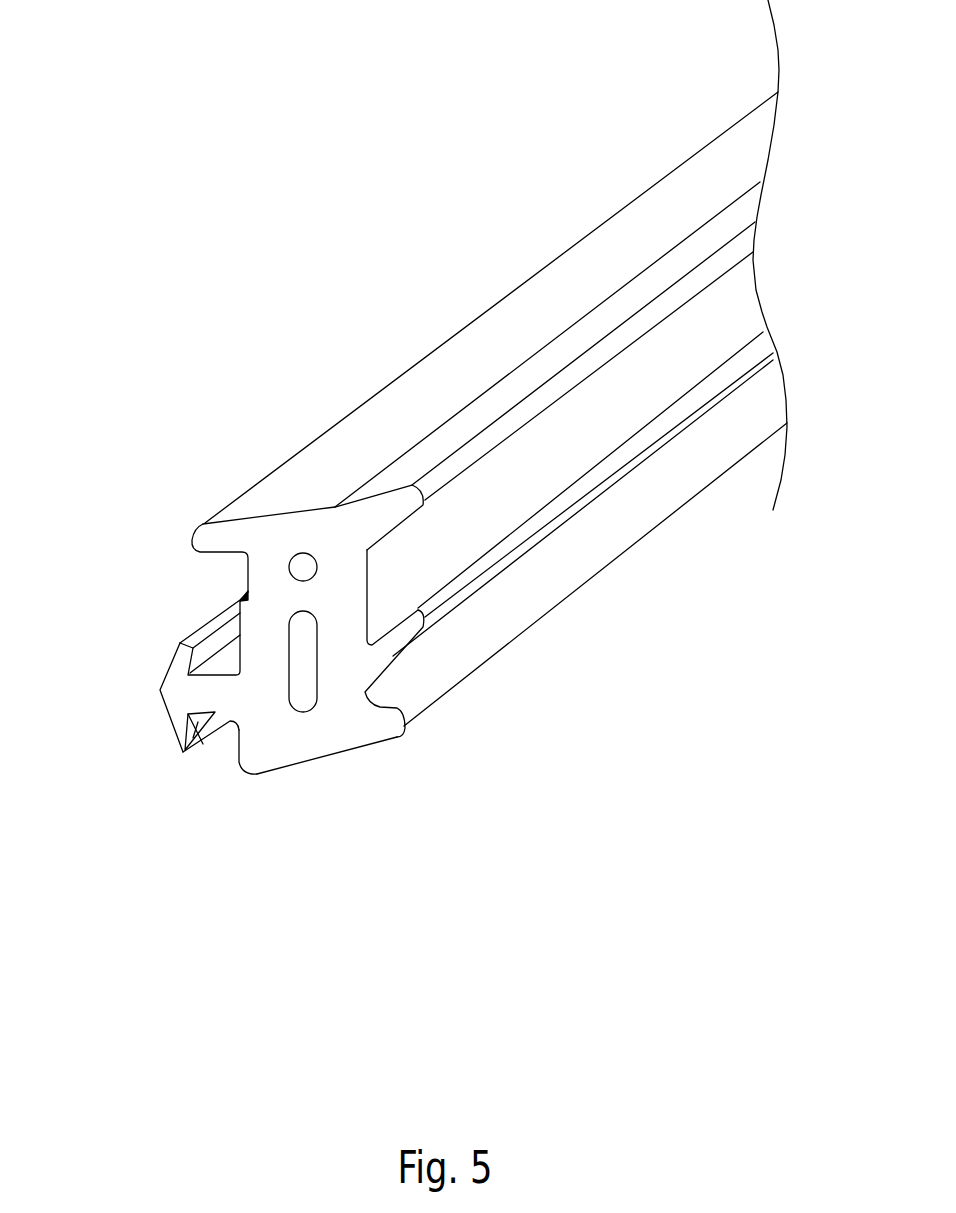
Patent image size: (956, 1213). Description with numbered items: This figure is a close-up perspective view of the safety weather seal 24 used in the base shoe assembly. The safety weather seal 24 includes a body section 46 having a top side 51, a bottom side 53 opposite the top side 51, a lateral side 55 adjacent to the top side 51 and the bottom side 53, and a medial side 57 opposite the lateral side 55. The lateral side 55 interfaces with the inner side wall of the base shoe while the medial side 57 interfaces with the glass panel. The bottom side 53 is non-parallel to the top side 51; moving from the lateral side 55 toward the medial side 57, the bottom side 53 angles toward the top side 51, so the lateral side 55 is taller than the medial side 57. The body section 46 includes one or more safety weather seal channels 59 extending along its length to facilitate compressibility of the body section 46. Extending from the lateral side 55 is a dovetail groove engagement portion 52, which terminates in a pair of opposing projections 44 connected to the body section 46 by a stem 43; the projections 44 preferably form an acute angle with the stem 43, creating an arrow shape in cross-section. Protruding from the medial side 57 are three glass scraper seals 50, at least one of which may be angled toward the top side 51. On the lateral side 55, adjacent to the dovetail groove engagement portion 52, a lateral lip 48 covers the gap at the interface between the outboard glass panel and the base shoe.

The safety weather seal 24 is at (266, 312).
The stem 43 is at (184, 751).
The projections 44 is at (180, 643).
The body section 46 is at (352, 748).
The lateral lip 48 is at (247, 491).
The glass scraper seals 50 is at (732, 248).
The top side 51 is at (460, 349).
The dovetail groove engagement portion 52 is at (220, 767).
The bottom side 53 is at (304, 806).
The lateral side 55 is at (165, 562).
The medial side 57 is at (734, 344).
The safety weather seal channels 59 is at (284, 666).